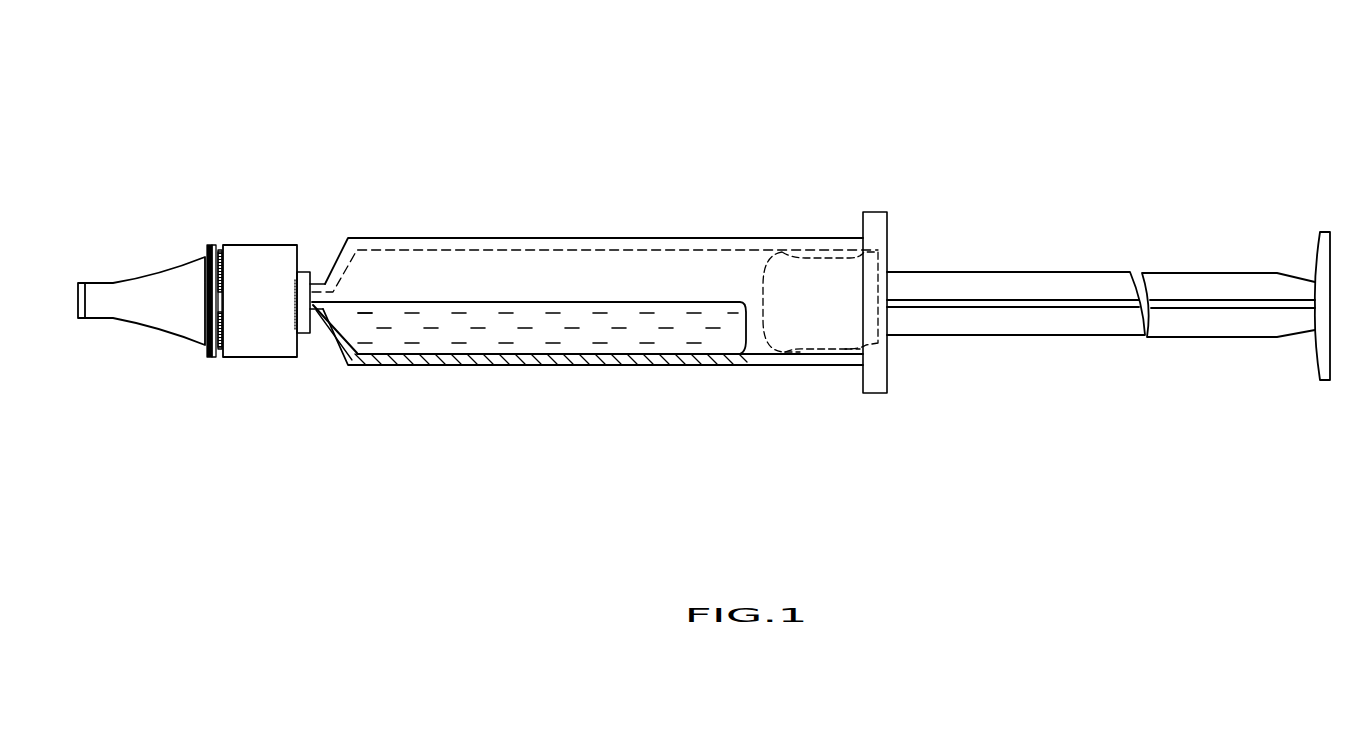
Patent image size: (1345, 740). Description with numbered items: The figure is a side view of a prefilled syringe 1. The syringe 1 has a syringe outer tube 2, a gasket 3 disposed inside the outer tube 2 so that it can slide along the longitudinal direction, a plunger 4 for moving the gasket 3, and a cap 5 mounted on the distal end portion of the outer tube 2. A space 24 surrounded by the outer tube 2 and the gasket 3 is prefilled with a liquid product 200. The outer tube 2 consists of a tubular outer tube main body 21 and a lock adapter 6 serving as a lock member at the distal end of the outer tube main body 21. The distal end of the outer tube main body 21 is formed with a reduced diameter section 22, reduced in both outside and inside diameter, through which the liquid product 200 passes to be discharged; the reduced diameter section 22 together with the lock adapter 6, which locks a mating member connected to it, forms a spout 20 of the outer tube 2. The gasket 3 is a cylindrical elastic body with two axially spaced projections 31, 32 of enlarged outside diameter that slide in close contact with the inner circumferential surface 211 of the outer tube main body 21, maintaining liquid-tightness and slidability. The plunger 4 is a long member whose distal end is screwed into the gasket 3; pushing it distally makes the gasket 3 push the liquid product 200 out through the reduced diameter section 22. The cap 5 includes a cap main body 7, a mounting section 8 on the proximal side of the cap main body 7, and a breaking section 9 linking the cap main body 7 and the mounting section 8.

The syringe 1 is at (923, 99).
The syringe outer tube 2 is at (479, 230).
The outer tube main body 21 is at (578, 242).
The inner circumferential surface 211 is at (672, 345).
The liquid product 200 is at (585, 318).
The space 24 is at (520, 340).
The spout 20 is at (337, 435).
The reduced diameter section 22 is at (315, 317).
The lock adapter 6 is at (260, 318).
The cap 5 is at (255, 140).
The cap main body 7 is at (157, 262).
The mounting section 8 is at (252, 234).
The breaking section 9 is at (217, 243).
The gasket 3 is at (896, 347).
The projection 31 is at (790, 356).
The projection 32 is at (850, 357).
The plunger 4 is at (1122, 347).